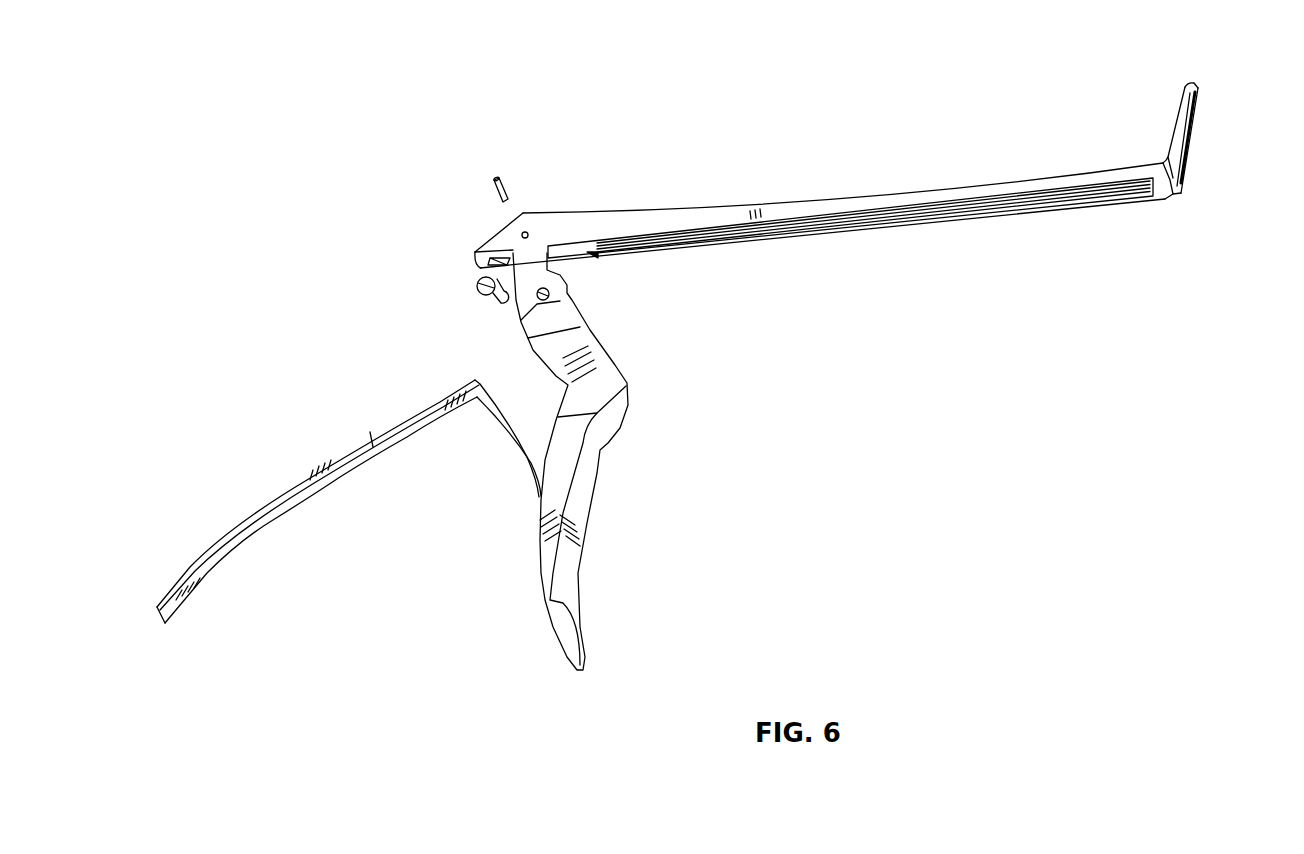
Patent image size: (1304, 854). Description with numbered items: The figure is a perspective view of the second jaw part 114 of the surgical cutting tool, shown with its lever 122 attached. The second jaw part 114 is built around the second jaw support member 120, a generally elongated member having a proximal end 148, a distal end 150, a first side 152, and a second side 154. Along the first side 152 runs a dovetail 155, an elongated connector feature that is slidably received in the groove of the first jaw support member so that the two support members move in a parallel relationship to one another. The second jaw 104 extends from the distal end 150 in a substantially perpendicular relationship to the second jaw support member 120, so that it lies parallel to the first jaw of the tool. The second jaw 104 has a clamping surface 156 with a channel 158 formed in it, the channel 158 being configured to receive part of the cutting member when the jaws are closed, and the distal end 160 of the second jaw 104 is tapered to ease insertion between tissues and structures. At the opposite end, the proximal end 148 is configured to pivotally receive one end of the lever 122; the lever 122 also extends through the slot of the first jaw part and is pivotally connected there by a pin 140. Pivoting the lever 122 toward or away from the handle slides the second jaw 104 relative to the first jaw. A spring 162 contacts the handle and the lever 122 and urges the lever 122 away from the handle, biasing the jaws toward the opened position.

The second jaw 104 is at (1168, 145).
The second jaw part 114 is at (979, 184).
The second jaw support member 120 is at (885, 194).
The lever 122 is at (590, 517).
The pin 140 is at (477, 285).
The proximal end 148 is at (475, 252).
The distal end 150 is at (1183, 193).
The first side 152 is at (823, 239).
The second side 154 is at (622, 211).
The dovetail 155 is at (713, 243).
The clamping surface 156 is at (1200, 110).
The channel 158 is at (1200, 97).
The distal end 160 is at (1187, 83).
The spring 162 is at (268, 517).